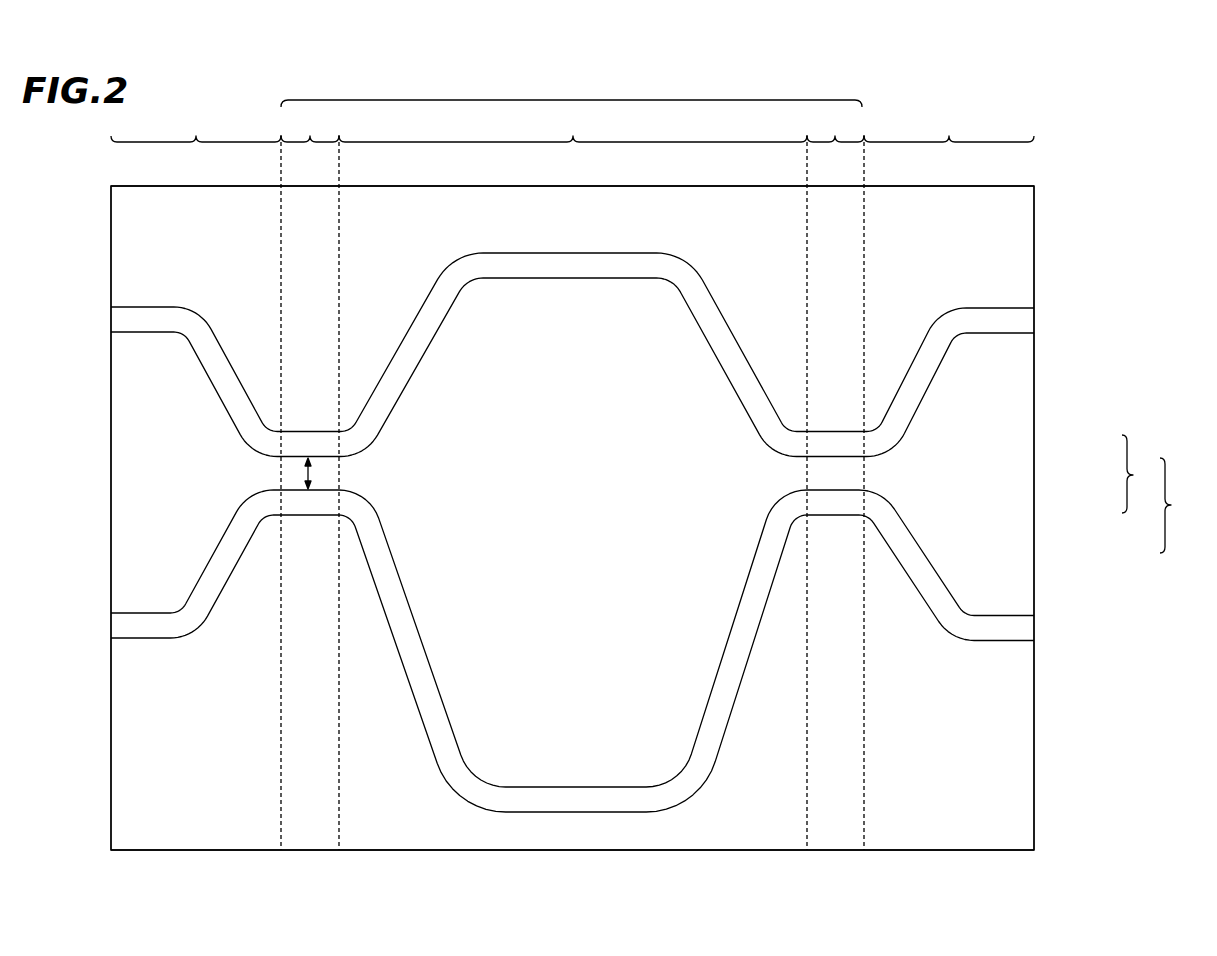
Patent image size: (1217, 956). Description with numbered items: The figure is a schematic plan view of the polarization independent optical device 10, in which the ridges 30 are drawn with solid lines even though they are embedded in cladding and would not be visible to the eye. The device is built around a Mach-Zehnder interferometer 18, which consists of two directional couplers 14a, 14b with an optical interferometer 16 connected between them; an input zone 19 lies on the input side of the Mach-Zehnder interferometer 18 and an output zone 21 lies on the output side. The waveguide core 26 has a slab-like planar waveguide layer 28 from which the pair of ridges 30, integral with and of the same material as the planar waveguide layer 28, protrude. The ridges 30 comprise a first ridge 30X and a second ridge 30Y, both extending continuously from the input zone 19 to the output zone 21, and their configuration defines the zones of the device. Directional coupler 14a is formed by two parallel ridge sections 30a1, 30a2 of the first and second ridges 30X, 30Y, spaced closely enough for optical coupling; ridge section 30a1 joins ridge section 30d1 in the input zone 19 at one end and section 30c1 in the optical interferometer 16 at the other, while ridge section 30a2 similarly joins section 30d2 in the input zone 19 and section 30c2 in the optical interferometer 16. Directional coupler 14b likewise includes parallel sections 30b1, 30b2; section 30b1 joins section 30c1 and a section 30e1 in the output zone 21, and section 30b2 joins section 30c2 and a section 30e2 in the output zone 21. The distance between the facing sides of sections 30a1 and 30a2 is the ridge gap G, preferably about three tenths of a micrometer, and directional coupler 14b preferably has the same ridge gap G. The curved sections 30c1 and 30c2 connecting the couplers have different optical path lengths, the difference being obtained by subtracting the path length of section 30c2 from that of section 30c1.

The polarization independent optical device 10 is at (1063, 171).
The directional coupler 14a is at (310, 481).
The directional coupler 14b is at (835, 481).
The optical interferometer 16 is at (573, 127).
The Mach-Zehnder interferometer 18 is at (571, 90).
The input zone 19 is at (196, 127).
The output zone 21 is at (949, 127).
The core 26 is at (656, 524).
The planar waveguide layer 28 is at (1023, 685).
The ridges 30 is at (636, 524).
The first ridge 30X is at (1023, 625).
The second ridge 30Y is at (1023, 322).
The ridge section 30a1 is at (310, 505).
The ridge section 30a2 is at (311, 440).
The ridge section 30b1 is at (834, 505).
The ridge section 30b2 is at (832, 440).
The ridge section 30c1 is at (578, 803).
The ridge section 30c2 is at (561, 262).
The ridge section 30d1 is at (154, 624).
The ridge section 30d2 is at (148, 315).
The ridge section 30e1 is at (988, 625).
The ridge section 30e2 is at (993, 318).
The ridge gap G is at (316, 473).